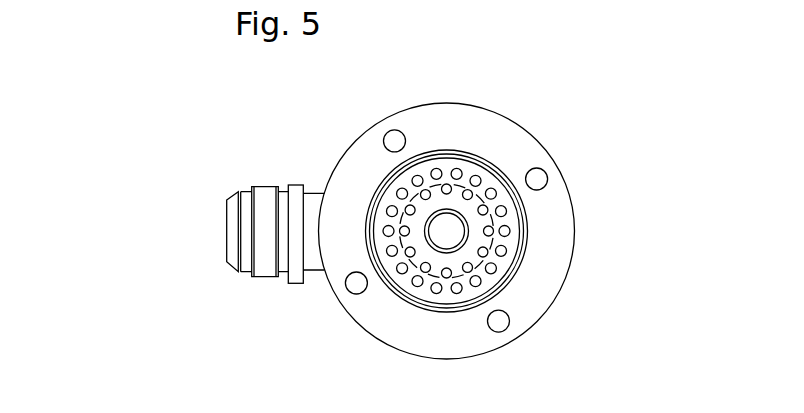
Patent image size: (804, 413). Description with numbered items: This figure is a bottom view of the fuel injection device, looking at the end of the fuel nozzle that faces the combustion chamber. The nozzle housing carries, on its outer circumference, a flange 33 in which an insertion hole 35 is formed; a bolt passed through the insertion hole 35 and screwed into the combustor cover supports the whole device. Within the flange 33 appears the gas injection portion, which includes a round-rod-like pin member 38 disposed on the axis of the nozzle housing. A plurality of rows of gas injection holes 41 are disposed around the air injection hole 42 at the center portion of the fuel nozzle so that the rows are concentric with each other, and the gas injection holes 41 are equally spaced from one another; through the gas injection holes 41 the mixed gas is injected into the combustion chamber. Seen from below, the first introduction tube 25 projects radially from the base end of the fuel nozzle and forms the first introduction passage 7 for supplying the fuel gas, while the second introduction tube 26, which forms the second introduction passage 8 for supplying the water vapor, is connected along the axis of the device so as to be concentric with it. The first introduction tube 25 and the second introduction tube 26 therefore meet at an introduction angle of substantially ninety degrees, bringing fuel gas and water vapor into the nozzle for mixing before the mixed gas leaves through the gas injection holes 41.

The first introduction passage 7 is at (312, 205).
The second introduction passage 8 is at (472, 212).
The first introduction tube 25 is at (263, 199).
The second introduction tube 26 is at (445, 173).
The flange 33 is at (522, 150).
The insertion hole 35 is at (545, 181).
The pin member 38 is at (445, 233).
The gas injection holes 41 is at (436, 289).
The air injection hole 42 is at (471, 228).